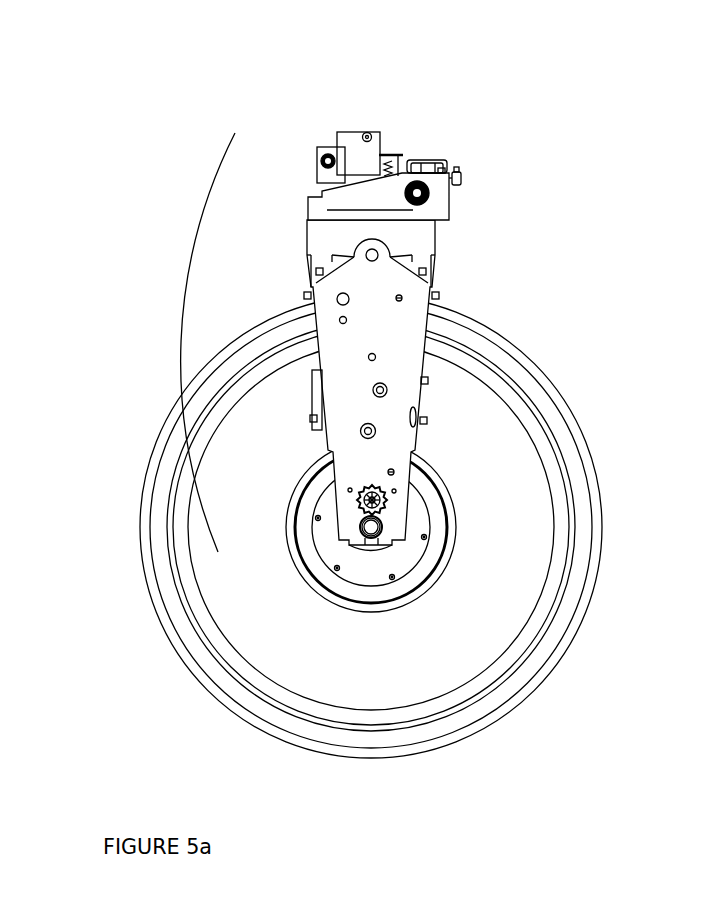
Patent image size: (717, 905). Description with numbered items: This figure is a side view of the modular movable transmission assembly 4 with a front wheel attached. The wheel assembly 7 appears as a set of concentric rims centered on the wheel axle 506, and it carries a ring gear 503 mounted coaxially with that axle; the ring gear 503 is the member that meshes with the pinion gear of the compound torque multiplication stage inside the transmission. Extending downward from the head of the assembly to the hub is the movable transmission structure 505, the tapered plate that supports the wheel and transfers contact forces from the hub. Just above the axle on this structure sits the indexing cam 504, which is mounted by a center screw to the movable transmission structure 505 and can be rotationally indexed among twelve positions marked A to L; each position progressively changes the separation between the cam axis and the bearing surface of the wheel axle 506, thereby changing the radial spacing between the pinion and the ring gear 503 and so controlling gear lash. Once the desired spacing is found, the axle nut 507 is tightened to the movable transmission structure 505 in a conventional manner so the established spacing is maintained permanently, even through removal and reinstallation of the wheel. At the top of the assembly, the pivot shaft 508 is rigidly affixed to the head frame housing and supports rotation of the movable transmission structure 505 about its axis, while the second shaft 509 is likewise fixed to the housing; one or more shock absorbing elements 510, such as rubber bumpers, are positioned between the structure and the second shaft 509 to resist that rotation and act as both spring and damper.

The modular movable transmission assembly 4 is at (181, 335).
The wheel assembly 7 is at (537, 688).
The ring gear 503 is at (442, 487).
The indexing cam 504 is at (390, 508).
The movable transmission structure 505 is at (400, 336).
The wheel axle 506 is at (201, 631).
The axle nut 507 is at (350, 538).
The pivot shaft 508 is at (430, 183).
The second shaft 509 is at (338, 146).
The shock absorbing element 510 is at (313, 186).